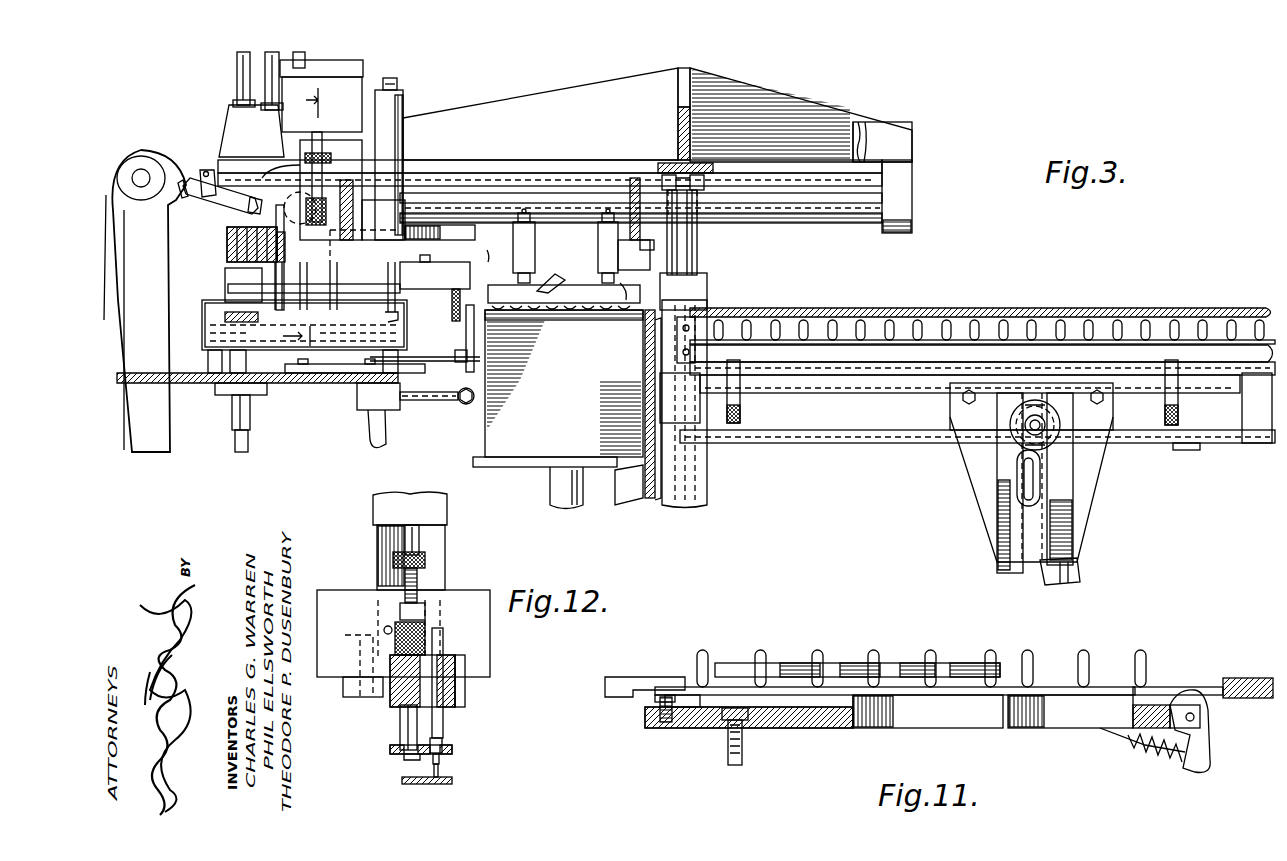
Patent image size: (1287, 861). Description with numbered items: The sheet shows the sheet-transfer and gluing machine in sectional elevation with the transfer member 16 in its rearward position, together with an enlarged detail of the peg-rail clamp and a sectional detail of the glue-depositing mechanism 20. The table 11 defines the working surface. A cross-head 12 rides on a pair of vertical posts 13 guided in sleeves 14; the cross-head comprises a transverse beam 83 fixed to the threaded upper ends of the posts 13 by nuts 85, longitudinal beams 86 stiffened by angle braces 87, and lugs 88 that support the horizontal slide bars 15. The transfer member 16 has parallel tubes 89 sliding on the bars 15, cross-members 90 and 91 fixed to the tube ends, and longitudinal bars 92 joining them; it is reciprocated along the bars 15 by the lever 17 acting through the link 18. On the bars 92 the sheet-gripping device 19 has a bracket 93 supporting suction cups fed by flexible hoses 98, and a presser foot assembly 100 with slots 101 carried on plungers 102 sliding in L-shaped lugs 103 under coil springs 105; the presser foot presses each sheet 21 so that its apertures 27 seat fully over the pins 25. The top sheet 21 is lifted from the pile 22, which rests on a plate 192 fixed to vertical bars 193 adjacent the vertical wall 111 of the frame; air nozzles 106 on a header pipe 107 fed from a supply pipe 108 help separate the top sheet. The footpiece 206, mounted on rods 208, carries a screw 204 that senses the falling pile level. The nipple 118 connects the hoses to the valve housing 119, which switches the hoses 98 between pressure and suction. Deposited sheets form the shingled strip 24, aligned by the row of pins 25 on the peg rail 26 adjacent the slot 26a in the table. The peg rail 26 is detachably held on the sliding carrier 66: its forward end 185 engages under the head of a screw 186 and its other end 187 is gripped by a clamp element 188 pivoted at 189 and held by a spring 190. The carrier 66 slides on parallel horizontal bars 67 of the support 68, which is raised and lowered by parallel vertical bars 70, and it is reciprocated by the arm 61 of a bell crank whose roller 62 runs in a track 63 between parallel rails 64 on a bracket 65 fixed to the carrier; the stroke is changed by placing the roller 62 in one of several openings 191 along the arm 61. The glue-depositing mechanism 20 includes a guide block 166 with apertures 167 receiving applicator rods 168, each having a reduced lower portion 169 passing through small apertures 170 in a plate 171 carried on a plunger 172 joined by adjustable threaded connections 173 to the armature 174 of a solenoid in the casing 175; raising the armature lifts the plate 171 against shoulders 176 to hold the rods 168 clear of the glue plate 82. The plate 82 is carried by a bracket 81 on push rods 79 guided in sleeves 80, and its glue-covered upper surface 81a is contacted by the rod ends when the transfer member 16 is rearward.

In FIG. 3, the table 11 is at (1236, 312).
In FIG. 11, the table 11 is at (1263, 680).
In FIG. 3, the cross-head 12 is at (823, 100).
In FIG. 3, the vertical posts 13 is at (692, 256).
In FIG. 3, the sleeves 14 is at (705, 468).
In FIG. 3, the slide bars 15 is at (841, 216).
In FIG. 3, the transfer member 16 is at (563, 182).
In FIG. 3, the lever 17 is at (166, 412).
In FIG. 3, the link 18 is at (207, 172).
In FIG. 3, the sheet-gripping device 19 is at (656, 295).
In FIG. 3, the glue-depositing mechanism 20 is at (378, 216).
In FIG. 12, the glue-depositing mechanism 20 is at (476, 665).
In FIG. 3, the sheet 21 is at (636, 320).
In FIG. 3, the pile 22 is at (532, 447).
In FIG. 11, the shingled strip 24 is at (899, 654).
In FIG. 3, the pins 25 is at (208, 316).
In FIG. 11, the pins 25 is at (758, 656).
In FIG. 11, the peg rail 26 is at (700, 715).
In FIG. 11, the slot 26a is at (618, 678).
In FIG. 11, the apertures 27 is at (957, 660).
In FIG. 3, the arm 61 is at (1010, 543).
In FIG. 3, the roller 62 is at (1060, 421).
In FIG. 3, the track 63 is at (1040, 400).
In FIG. 3, the parallel rails 64 is at (1062, 405).
In FIG. 3, the bracket 65 is at (1083, 383).
In FIG. 3, the sliding carrier 66 is at (860, 375).
In FIG. 11, the sliding carrier 66 is at (653, 739).
In FIG. 3, the parallel horizontal bars 67 is at (1207, 392).
In FIG. 3, the support 68 is at (1150, 443).
In FIG. 3, the parallel vertical bars 70 is at (1068, 571).
In FIG. 3, the push rods 79 is at (235, 440).
In FIG. 3, the guide sleeve 80 is at (250, 410).
In FIG. 3, the bracket 81 is at (230, 271).
In FIG. 12, the upper surface 81a is at (405, 776).
In FIG. 3, the plate 82 is at (400, 316).
In FIG. 12, the plate 82 is at (455, 781).
In FIG. 3, the transverse beam 83 is at (666, 163).
In FIG. 3, the nuts 85 is at (704, 186).
In FIG. 3, the longitudinal beams 86 is at (622, 92).
In FIG. 3, the angle braces 87 is at (896, 131).
In FIG. 3, the lugs 88 is at (906, 192).
In FIG. 3, the parallel tubes 89 is at (500, 188).
In FIG. 3, the cross-member 90 is at (636, 178).
In FIG. 3, the cross-member 91 is at (355, 196).
In FIG. 12, the cross-member 91 is at (470, 592).
In FIG. 3, the longitudinal bars 92 is at (487, 265).
In FIG. 3, the bracket 93 is at (630, 266).
In FIG. 3, the flexible hose 98 is at (560, 278).
In FIG. 3, the presser foot assembly 100 is at (564, 294).
In FIG. 3, the slots 101 is at (590, 312).
In FIG. 3, the plungers 102 is at (532, 214).
In FIG. 3, the L-shaped lugs 103 is at (598, 248).
In FIG. 3, the coil spring 105 is at (618, 310).
In FIG. 3, the air nozzles 106 is at (466, 333).
In FIG. 3, the header pipe 107 is at (466, 405).
In FIG. 3, the supply pipe 108 is at (444, 404).
In FIG. 3, the vertical wall 111 is at (645, 499).
In FIG. 3, the nipple 118 is at (264, 69).
In FIG. 3, the valve housing 119 is at (236, 128).
In FIG. 3, the guide block 166 is at (232, 230).
In FIG. 12, the guide block 166 is at (456, 690).
In FIG. 3, the apertures 167 is at (228, 246).
In FIG. 3, the applicator rods 168 is at (278, 236).
In FIG. 12, the applicator rods 168 is at (442, 646).
In FIG. 12, the lower portion 169 is at (445, 759).
In FIG. 12, the small apertures 170 is at (428, 751).
In FIG. 3, the plate 171 is at (350, 295).
In FIG. 12, the plate 171 is at (455, 750).
In FIG. 12, the plunger 172 is at (400, 728).
In FIG. 12, the adjustable threaded connections 173 is at (400, 608).
In FIG. 3, the armature 174 is at (320, 142).
In FIG. 12, the armature 174 is at (419, 538).
In FIG. 3, the casing 175 is at (352, 83).
In FIG. 12, the casing 175 is at (447, 512).
In FIG. 12, the shoulders 176 is at (445, 742).
In FIG. 11, the forward end 185 is at (672, 696).
In FIG. 11, the screw 186 is at (647, 701).
In FIG. 11, the other end 187 is at (1168, 700).
In FIG. 11, the clamp element 188 is at (1200, 740).
In FIG. 11, the pivot 189 is at (1196, 717).
In FIG. 11, the spring 190 is at (1150, 754).
In FIG. 3, the openings 191 is at (1036, 490).
In FIG. 3, the plate 192 is at (498, 463).
In FIG. 3, the vertical bars 193 is at (553, 495).
In FIG. 3, the screw 204 is at (453, 299).
In FIG. 3, the footpiece 206 is at (435, 272).
In FIG. 3, the rods 208 is at (392, 80).